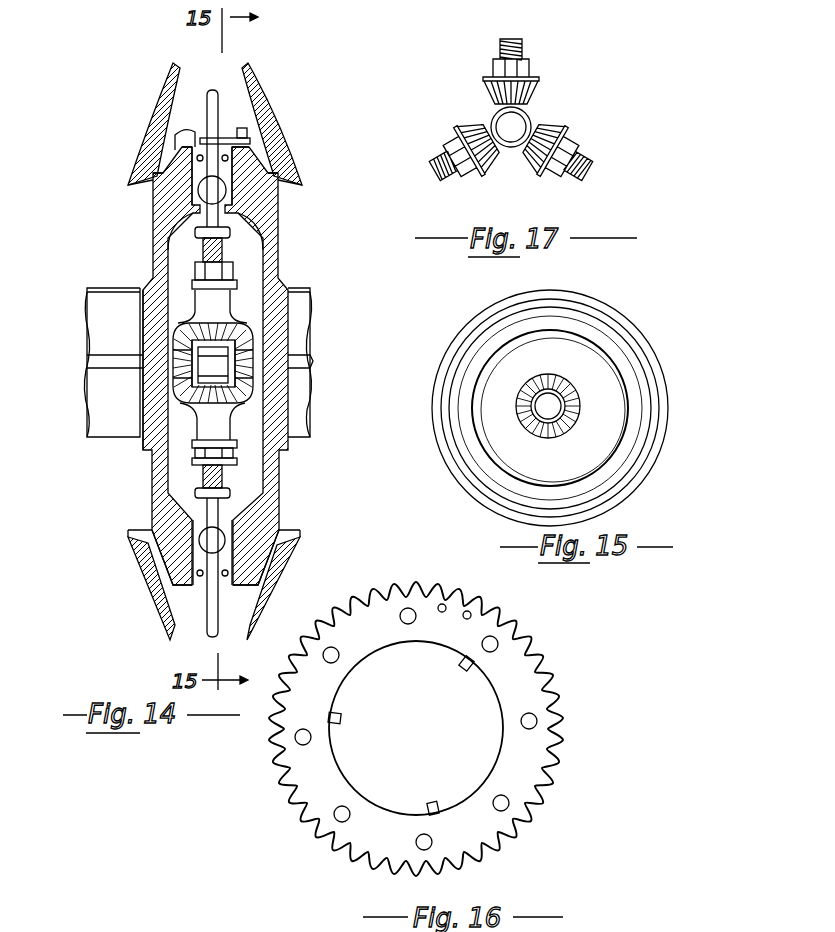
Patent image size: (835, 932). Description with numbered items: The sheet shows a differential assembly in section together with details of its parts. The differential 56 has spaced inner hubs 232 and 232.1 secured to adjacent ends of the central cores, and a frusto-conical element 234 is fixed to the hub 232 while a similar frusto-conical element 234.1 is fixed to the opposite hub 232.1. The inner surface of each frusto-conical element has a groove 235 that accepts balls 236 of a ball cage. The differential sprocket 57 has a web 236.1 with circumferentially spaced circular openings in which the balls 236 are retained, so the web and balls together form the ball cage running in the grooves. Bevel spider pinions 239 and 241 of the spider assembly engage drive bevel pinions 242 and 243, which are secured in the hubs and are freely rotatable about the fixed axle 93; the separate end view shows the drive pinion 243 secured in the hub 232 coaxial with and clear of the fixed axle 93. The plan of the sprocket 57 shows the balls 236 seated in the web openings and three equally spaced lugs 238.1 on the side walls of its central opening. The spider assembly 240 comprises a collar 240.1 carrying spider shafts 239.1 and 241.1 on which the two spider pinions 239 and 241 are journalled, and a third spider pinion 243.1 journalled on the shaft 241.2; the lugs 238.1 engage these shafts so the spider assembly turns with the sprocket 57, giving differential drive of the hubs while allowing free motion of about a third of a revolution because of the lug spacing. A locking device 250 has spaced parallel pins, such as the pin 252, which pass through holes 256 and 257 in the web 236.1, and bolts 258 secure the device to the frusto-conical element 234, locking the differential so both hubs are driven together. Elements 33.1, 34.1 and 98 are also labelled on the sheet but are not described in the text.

In FIG. 14, the differential 56 is at (214, 324).
In FIG. 14, the differential sprocket 57 is at (198, 607).
In FIG. 16, the differential sprocket 57 is at (512, 664).
In FIG. 14, the funnel wall 33.1 is at (263, 107).
In FIG. 16, the funnel wall 33.1 is at (314, 585).
In FIG. 14, the funnel wall 34.1 is at (160, 107).
In FIG. 14, the fixed axle 93 is at (308, 362).
In FIG. 14, the support bracket 98 is at (118, 440).
In FIG. 14, the inner hub 232 is at (273, 260).
In FIG. 15, the inner hub 232 is at (565, 358).
In FIG. 14, the inner hub 232.1 is at (160, 253).
In FIG. 14, the frusto-conical element 234 is at (270, 173).
In FIG. 14, the frusto-conical element 234.1 is at (150, 210).
In FIG. 14, the groove 235 is at (228, 190).
In FIG. 14, the balls 236 is at (247, 520).
In FIG. 16, the balls 236 is at (409, 709).
In FIG. 16, the web 236.1 is at (507, 617).
In FIG. 16, the lugs 238.1 is at (483, 708).
In FIG. 14, the bevel spider pinion 239 is at (243, 443).
In FIG. 17, the bevel spider pinion 239 is at (490, 121).
In FIG. 17, the spider shaft 239.1 is at (442, 172).
In FIG. 17, the spider assembly 240 is at (530, 110).
In FIG. 14, the collar 240.1 is at (173, 387).
In FIG. 17, the collar 240.1 is at (490, 113).
In FIG. 14, the bevel spider pinion 241 is at (227, 317).
In FIG. 17, the bevel spider pinion 241 is at (477, 54).
In FIG. 17, the spider shaft 241.1 is at (490, 40).
In FIG. 17, the shaft 241.2 is at (582, 185).
In FIG. 14, the drive bevel pinion 242 is at (177, 350).
In FIG. 14, the drive bevel pinion 243 is at (247, 347).
In FIG. 15, the drive bevel pinion 243 is at (562, 437).
In FIG. 17, the third spider pinion 243.1 is at (547, 133).
In FIG. 14, the locking device 250 is at (229, 122).
In FIG. 14, the pin 252 is at (185, 133).
In FIG. 16, the hole 256 is at (441, 602).
In FIG. 16, the hole 257 is at (470, 610).
In FIG. 14, the bolts 258 is at (262, 140).